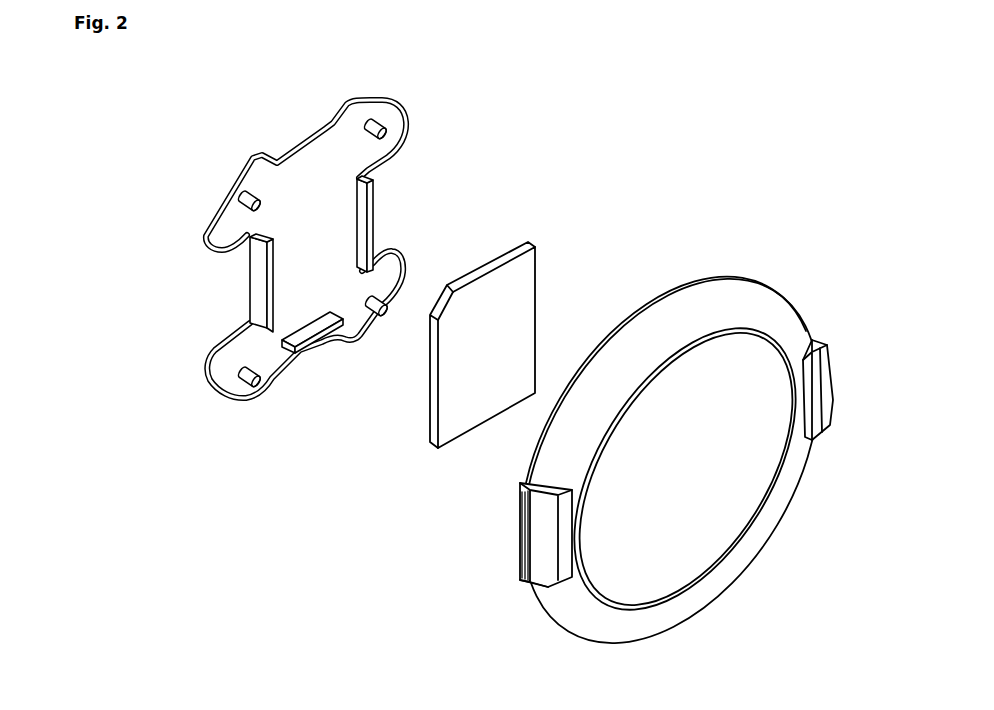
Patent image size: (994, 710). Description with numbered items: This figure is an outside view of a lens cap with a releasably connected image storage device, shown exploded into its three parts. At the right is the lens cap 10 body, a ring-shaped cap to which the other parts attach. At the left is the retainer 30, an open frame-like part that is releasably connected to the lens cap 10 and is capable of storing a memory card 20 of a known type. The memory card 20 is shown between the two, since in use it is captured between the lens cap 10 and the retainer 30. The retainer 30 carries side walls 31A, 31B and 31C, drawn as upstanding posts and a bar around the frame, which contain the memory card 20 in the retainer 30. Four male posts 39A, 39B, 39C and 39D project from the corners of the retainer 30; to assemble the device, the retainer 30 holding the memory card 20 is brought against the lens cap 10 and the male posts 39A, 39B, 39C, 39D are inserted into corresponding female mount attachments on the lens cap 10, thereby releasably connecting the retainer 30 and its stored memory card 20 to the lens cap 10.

The lens cap 10 is at (703, 558).
The memory card 20 is at (514, 313).
The retainer 30 is at (269, 263).
The side wall 31A is at (252, 290).
The side wall 31B is at (371, 220).
The side wall 31C is at (326, 331).
The male post 39A is at (243, 198).
The male post 39B is at (375, 122).
The male post 39C is at (257, 388).
The male post 39D is at (381, 318).